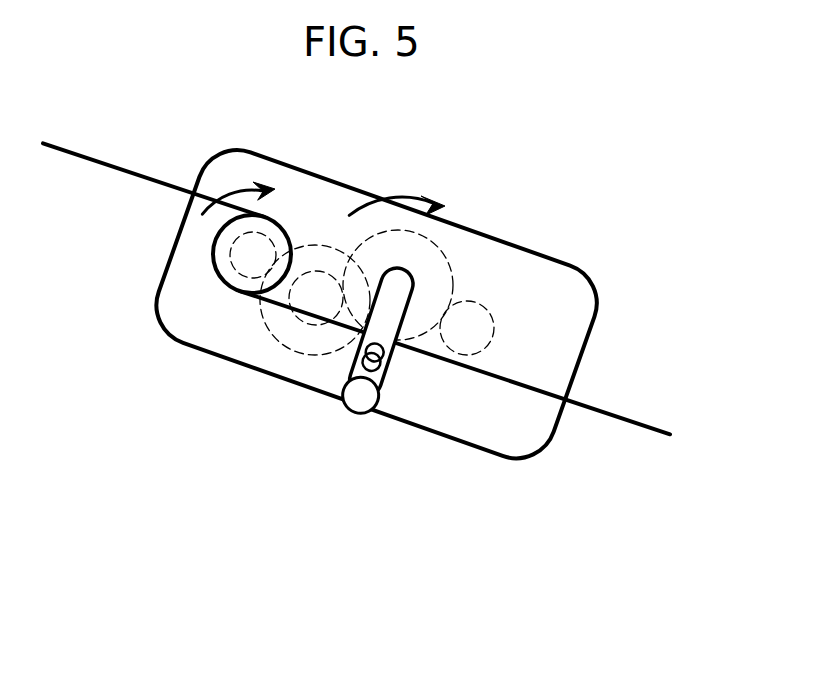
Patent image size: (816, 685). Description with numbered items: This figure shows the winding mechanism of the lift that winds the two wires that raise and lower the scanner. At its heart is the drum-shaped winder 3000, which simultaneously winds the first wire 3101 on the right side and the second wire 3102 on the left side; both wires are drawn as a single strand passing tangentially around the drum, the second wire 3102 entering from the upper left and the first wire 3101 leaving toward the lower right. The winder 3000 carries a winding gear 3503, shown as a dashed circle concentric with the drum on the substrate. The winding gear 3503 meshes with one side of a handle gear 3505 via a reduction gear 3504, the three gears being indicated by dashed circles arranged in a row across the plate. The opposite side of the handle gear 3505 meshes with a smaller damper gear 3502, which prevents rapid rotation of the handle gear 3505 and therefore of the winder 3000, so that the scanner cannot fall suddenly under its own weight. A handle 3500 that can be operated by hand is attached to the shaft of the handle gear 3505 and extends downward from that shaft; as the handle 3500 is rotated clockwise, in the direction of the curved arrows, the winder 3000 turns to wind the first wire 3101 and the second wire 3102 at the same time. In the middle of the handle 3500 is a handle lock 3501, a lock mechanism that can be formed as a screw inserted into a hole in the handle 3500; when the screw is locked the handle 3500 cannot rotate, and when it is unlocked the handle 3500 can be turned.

The second wire 3102 is at (93, 159).
The first wire 3101 is at (620, 419).
The winder 3000 is at (215, 240).
The winding gear 3503 is at (240, 277).
The reduction gear 3504 is at (277, 347).
The handle gear 3505 is at (463, 267).
The damper gear 3502 is at (495, 317).
The handle 3500 is at (354, 400).
The handle lock 3501 is at (383, 362).